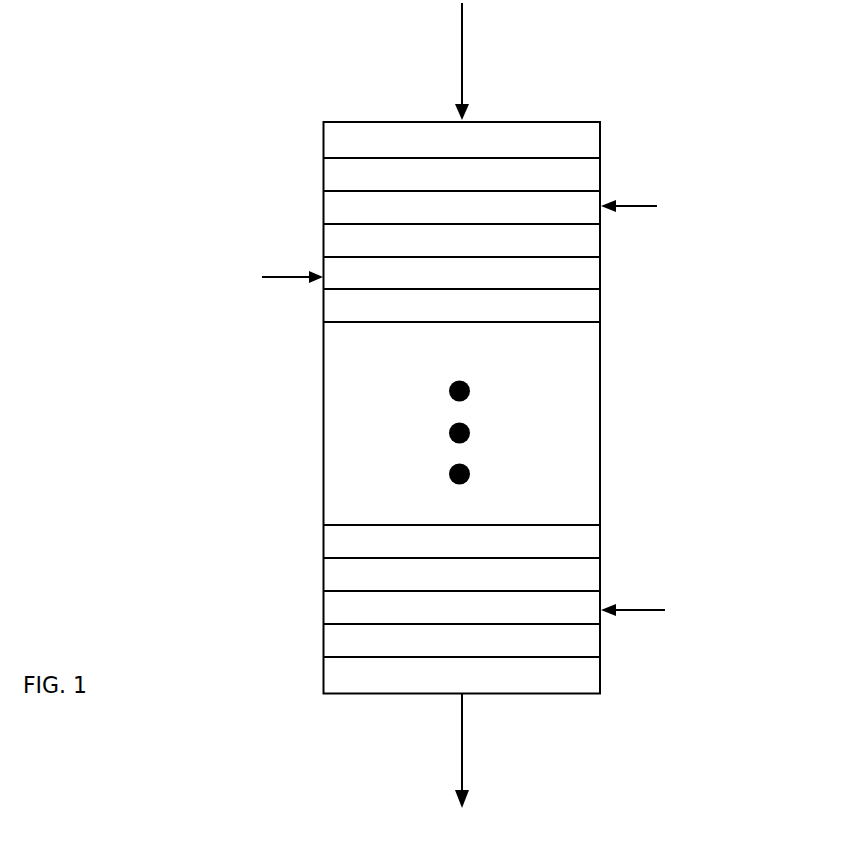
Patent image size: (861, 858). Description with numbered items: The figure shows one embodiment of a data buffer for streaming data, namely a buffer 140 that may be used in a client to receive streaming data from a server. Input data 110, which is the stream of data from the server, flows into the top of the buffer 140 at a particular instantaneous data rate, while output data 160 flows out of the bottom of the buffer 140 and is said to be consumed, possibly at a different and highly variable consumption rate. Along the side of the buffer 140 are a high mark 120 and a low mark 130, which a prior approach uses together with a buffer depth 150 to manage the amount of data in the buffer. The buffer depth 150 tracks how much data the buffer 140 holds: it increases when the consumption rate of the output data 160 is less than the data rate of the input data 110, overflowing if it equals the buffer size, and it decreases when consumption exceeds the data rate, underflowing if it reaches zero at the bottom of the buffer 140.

The input data 110 is at (462, 25).
The high mark 120 is at (657, 206).
The low mark 130 is at (643, 610).
The buffer 140 is at (600, 382).
The buffer depth 150 is at (262, 277).
The output data 160 is at (462, 742).